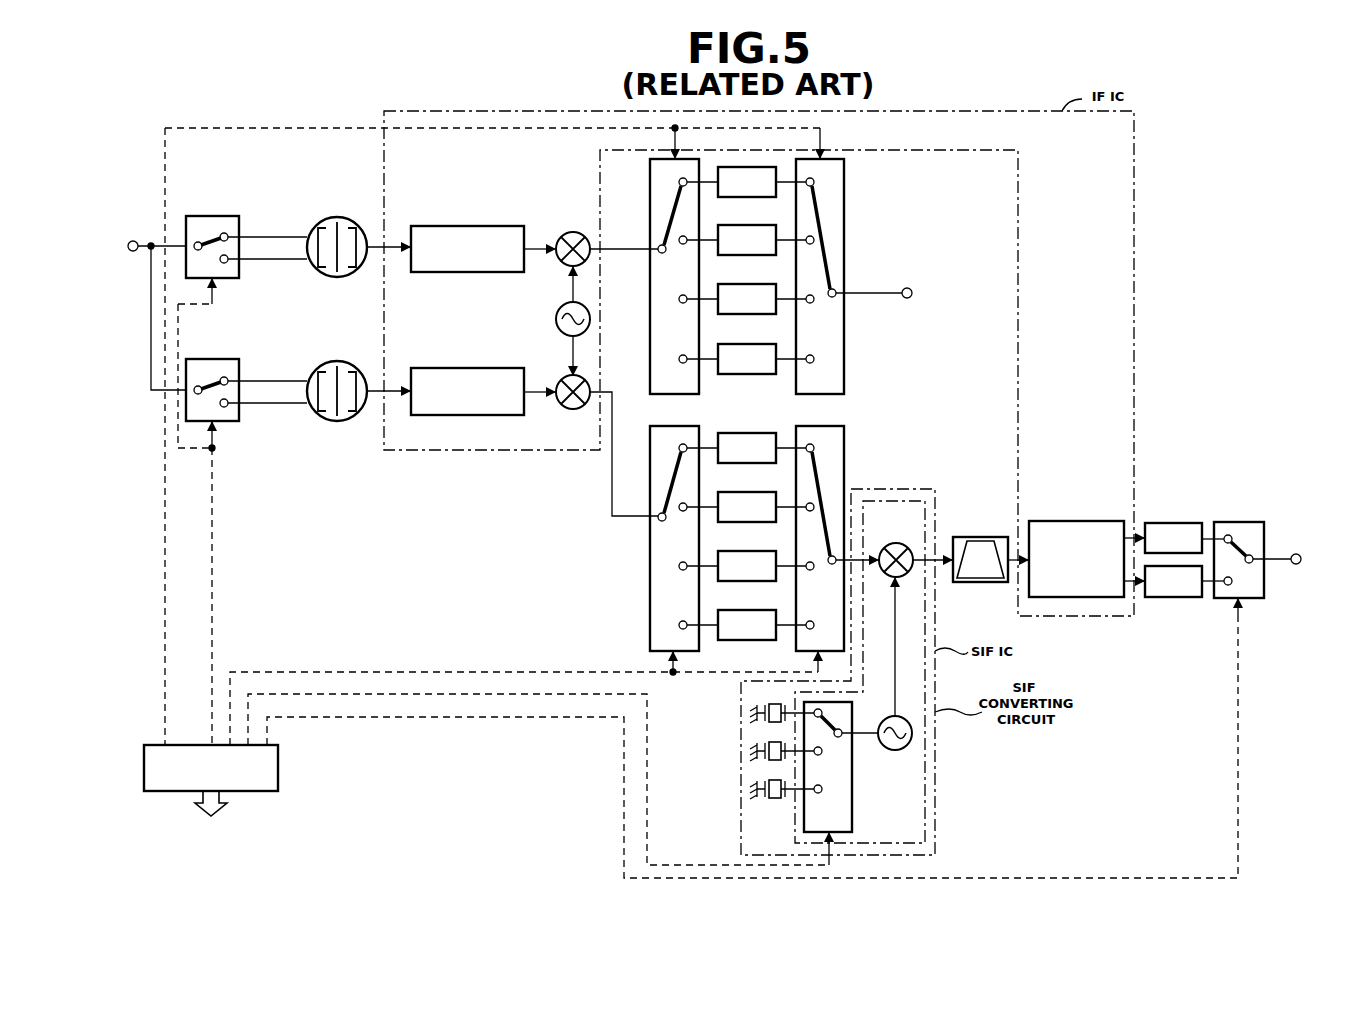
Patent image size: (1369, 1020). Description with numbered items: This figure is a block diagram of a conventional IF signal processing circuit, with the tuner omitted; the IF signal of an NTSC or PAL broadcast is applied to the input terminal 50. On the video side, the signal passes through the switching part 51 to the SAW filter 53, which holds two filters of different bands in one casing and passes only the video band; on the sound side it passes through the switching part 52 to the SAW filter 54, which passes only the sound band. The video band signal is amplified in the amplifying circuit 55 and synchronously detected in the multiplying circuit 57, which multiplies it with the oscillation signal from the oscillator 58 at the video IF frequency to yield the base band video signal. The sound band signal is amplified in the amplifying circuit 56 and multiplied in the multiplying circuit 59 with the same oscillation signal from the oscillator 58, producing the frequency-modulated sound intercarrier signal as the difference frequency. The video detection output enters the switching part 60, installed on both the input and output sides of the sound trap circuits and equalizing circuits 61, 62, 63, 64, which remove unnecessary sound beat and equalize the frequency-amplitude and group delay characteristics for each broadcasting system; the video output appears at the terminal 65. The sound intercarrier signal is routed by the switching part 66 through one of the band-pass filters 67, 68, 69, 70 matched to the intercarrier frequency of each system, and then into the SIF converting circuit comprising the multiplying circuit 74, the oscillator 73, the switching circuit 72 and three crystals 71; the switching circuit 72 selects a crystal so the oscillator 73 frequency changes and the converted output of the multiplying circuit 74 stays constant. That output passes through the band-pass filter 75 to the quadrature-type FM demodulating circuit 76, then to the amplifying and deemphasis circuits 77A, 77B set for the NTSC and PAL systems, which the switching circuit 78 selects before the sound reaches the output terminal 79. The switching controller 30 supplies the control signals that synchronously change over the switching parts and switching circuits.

The switching controller 30 is at (278, 770).
The input terminal 50 is at (134, 240).
The switching part 51 is at (215, 214).
The switching part 52 is at (240, 417).
The SAW filter 53 is at (337, 216).
The SAW filter 54 is at (337, 360).
The amplifying circuit 55 is at (467, 224).
The amplifying circuit 56 is at (467, 366).
The multiplying circuit 57 is at (560, 238).
The oscillator 58 is at (560, 306).
The multiplying circuit 59 is at (560, 381).
The switching part 60 is at (836, 159).
The sound trap circuit and equalizing circuit 61 is at (765, 199).
The sound trap circuit and equalizing circuit 62 is at (765, 257).
The sound trap circuit and equalizing circuit 63 is at (765, 316).
The sound trap circuit and equalizing circuit 64 is at (765, 376).
The terminal 65 is at (907, 287).
The switching part 66 is at (836, 426).
The band-pass filter 67 is at (765, 465).
The band-pass filter 68 is at (765, 524).
The band-pass filter 69 is at (765, 583).
The band-pass filter 70 is at (765, 642).
The crystals 71 is at (776, 800).
The switching circuit 72 is at (853, 813).
The oscillator 73 is at (896, 750).
The multiplying circuit 74 is at (896, 542).
The band-pass filter 75 is at (980, 537).
The FM demodulating circuit 76 is at (1071, 519).
The amplifying circuit and deemphasis circuit 77A is at (1175, 521).
The amplifying circuit and deemphasis circuit 77B is at (1176, 599).
The switching circuit 78 is at (1236, 520).
The output terminal 79 is at (1296, 553).